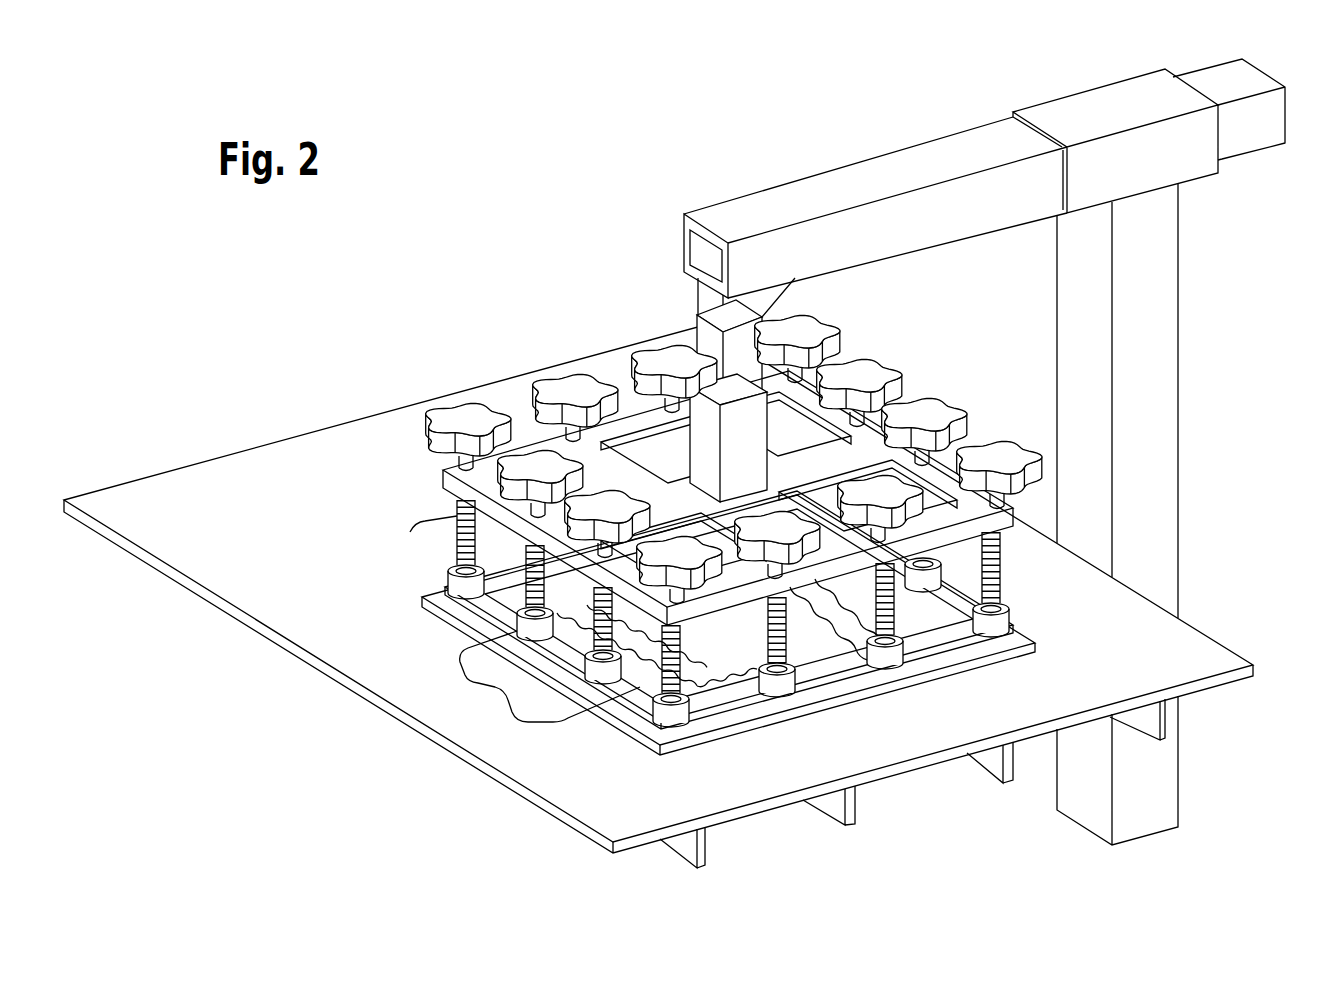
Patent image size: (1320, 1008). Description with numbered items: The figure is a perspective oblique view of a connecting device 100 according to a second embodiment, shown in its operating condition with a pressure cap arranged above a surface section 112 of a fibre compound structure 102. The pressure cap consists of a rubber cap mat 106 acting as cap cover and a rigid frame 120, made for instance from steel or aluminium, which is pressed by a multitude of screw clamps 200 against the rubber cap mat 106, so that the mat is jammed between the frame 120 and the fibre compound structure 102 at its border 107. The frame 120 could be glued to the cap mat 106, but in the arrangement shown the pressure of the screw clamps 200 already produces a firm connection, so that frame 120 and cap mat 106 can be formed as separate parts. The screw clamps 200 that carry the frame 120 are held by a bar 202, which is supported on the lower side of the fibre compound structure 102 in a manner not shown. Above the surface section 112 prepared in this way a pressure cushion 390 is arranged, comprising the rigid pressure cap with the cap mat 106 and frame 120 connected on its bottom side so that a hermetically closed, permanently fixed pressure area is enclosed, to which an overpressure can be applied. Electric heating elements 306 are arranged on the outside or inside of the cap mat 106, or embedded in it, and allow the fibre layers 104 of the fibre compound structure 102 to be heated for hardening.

The connecting device 100 is at (497, 190).
The fibre compound structure 102 is at (275, 465).
The fibre layer 104 is at (755, 718).
The cap mat 106 is at (920, 620).
The border 107 is at (710, 740).
The surface section 112 is at (503, 690).
The frame 120 is at (953, 635).
The screw clamps 200 is at (453, 525).
The bar 202 is at (918, 175).
The heating element 306 is at (830, 642).
The pressure cushion 390 is at (938, 365).